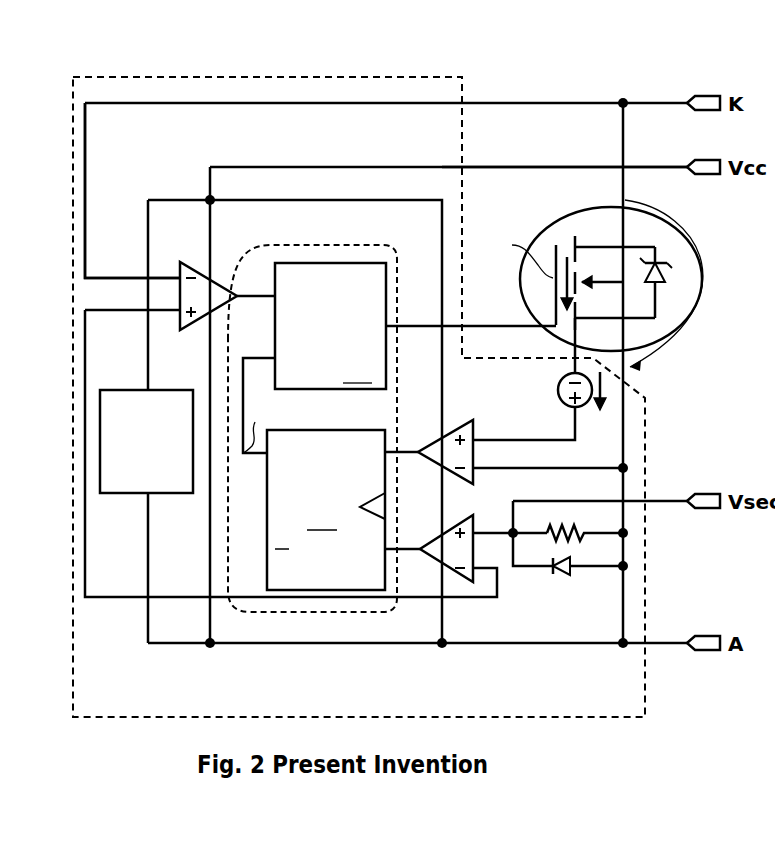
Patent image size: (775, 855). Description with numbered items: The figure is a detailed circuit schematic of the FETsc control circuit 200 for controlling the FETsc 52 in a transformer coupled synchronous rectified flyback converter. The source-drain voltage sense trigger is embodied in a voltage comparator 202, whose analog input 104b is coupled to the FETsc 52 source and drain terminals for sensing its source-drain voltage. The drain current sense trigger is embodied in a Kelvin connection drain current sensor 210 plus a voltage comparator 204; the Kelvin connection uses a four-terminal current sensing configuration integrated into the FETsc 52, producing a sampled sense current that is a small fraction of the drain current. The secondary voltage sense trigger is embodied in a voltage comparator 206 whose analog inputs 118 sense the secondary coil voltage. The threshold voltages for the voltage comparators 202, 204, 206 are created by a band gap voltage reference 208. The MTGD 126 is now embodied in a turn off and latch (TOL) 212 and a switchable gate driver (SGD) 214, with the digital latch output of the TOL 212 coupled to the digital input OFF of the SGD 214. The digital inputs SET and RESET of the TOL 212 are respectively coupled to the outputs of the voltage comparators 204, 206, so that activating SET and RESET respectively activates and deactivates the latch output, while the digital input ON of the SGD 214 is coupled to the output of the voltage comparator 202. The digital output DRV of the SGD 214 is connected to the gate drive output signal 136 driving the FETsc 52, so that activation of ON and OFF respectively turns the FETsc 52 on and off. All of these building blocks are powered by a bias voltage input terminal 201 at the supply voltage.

The FETsc control circuit 200 is at (383, 77).
The analog input 104b is at (100, 278).
The voltage comparator 202 is at (188, 262).
The band gap voltage reference 208 is at (118, 390).
The switchable gate driver (SGD) 214 is at (330, 326).
The drive output signal VGATE 136 is at (425, 326).
The turn off and latch (TOL) 212 is at (314, 496).
The MTGD 126 is at (343, 612).
The voltage comparator 204 is at (432, 447).
The voltage comparator 206 is at (432, 541).
The Kelvin connection IDS sensor 210 is at (558, 390).
The FETsc 52 is at (547, 226).
The bias voltage input terminal (BVIT) 201 is at (667, 167).
The analog inputs 118 is at (660, 501).